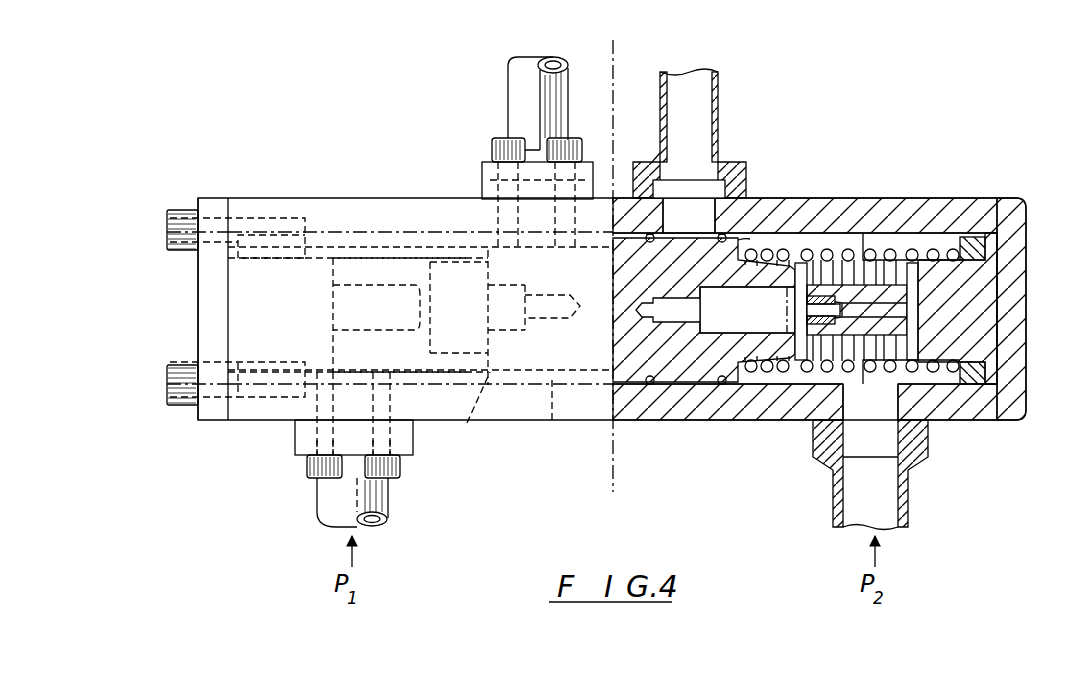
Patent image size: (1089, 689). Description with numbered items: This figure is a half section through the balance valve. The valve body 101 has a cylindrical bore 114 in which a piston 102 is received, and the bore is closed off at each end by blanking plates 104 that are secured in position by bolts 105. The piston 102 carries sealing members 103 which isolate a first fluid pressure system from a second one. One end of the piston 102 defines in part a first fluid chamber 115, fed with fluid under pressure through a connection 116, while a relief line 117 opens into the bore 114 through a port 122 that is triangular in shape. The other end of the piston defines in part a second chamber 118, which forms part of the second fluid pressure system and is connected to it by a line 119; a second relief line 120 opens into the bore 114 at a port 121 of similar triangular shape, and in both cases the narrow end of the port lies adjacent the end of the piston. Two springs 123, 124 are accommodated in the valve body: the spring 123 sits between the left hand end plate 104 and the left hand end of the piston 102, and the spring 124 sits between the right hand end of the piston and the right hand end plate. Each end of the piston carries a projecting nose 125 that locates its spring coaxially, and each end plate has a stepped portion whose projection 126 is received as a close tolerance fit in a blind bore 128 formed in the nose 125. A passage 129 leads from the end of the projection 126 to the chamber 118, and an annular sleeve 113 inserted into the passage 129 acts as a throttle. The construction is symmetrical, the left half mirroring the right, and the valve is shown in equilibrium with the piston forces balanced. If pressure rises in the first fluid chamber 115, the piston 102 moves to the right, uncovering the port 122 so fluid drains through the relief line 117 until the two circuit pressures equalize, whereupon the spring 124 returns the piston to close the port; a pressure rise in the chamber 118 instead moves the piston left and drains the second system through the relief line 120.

The valve body 101 is at (520, 420).
The piston 102 is at (680, 388).
The sealing members 103 is at (722, 392).
The blanking plates 104 is at (196, 291).
The bolts 105 is at (183, 236).
The annular sleeve 113 is at (770, 420).
The cylindrical bore 114 is at (552, 420).
The first fluid chamber 115 is at (405, 237).
The connection 116 is at (313, 498).
The relief line 117 is at (518, 86).
The second chamber 118 is at (908, 236).
The line 119 is at (910, 498).
The second relief line 120 is at (690, 86).
The port 121 is at (720, 210).
The port 122 is at (528, 212).
The spring 123 is at (395, 441).
The spring 124 is at (806, 246).
The projecting nose 125 is at (818, 262).
The projection 126 is at (905, 292).
The blind bore 128 is at (726, 332).
The passage 129 is at (905, 318).